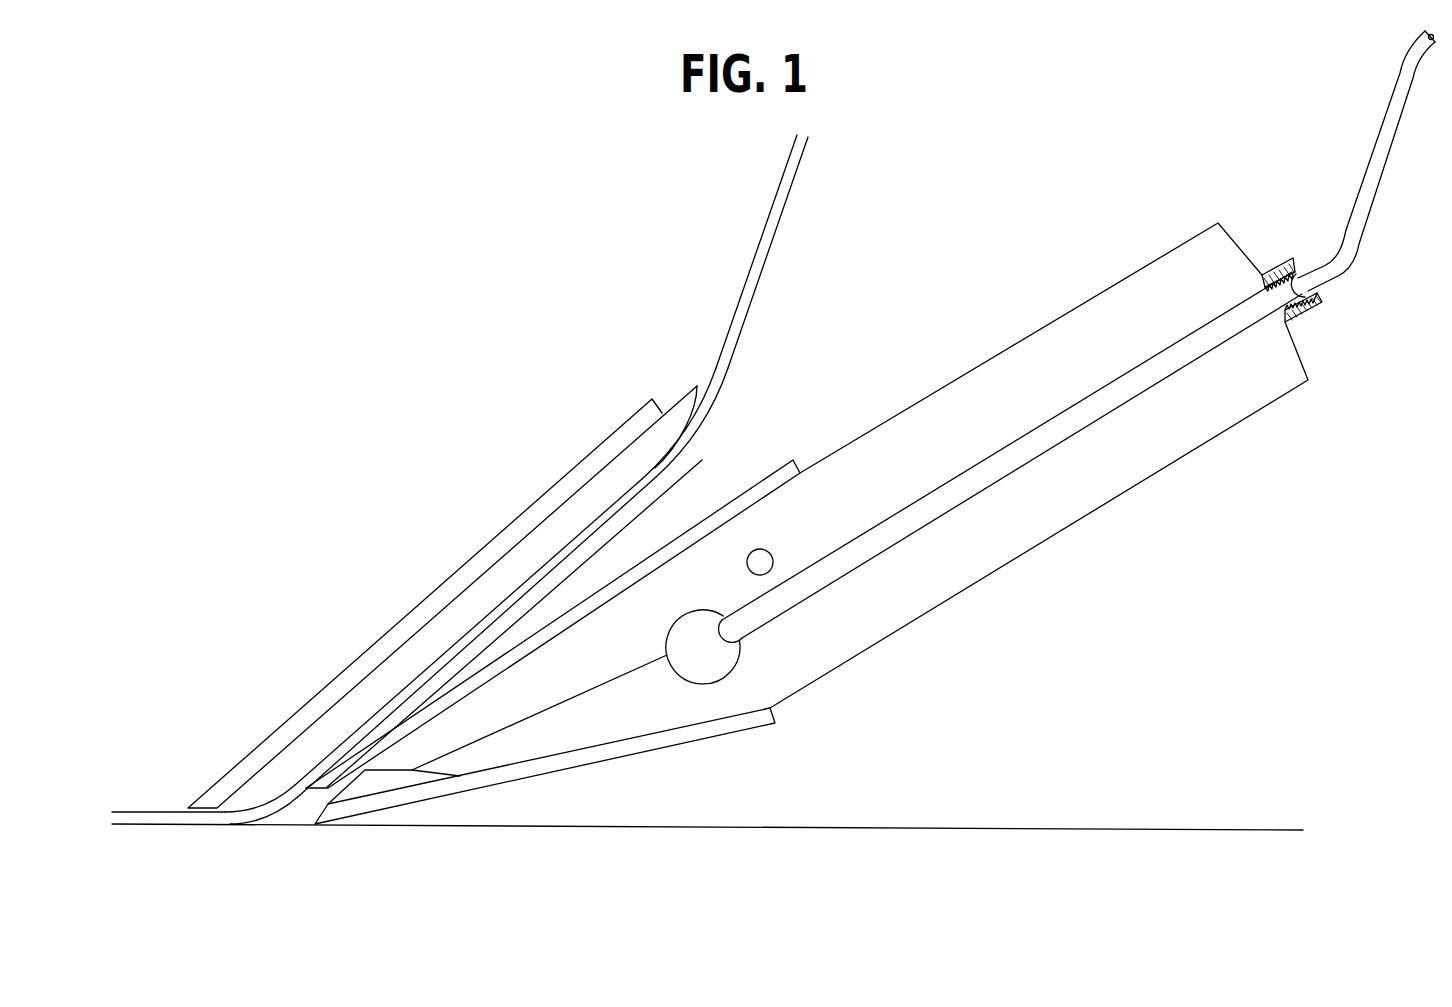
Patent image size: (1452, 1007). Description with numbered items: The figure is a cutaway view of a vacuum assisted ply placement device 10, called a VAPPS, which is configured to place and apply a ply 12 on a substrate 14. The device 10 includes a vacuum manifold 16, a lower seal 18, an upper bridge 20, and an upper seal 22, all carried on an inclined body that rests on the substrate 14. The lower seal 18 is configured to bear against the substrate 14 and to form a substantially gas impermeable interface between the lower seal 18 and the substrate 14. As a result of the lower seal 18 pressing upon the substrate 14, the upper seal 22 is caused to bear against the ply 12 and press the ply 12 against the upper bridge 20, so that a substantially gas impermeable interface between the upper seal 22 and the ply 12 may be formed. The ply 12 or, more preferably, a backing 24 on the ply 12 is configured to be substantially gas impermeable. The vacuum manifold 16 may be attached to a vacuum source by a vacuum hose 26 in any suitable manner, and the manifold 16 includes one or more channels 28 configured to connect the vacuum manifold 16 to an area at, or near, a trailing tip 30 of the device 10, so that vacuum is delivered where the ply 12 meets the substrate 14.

The vacuum assisted ply placement device 10 is at (593, 196).
The ply 12 is at (756, 272).
The substrate 14 is at (1088, 820).
The vacuum manifold 16 is at (718, 664).
The lower seal 18 is at (337, 812).
The upper bridge 20 is at (297, 756).
The upper seal 22 is at (306, 788).
The backing 24 is at (726, 311).
The vacuum hose 26 is at (1376, 144).
The channels 28 is at (554, 710).
The trailing tip 30 is at (308, 814).